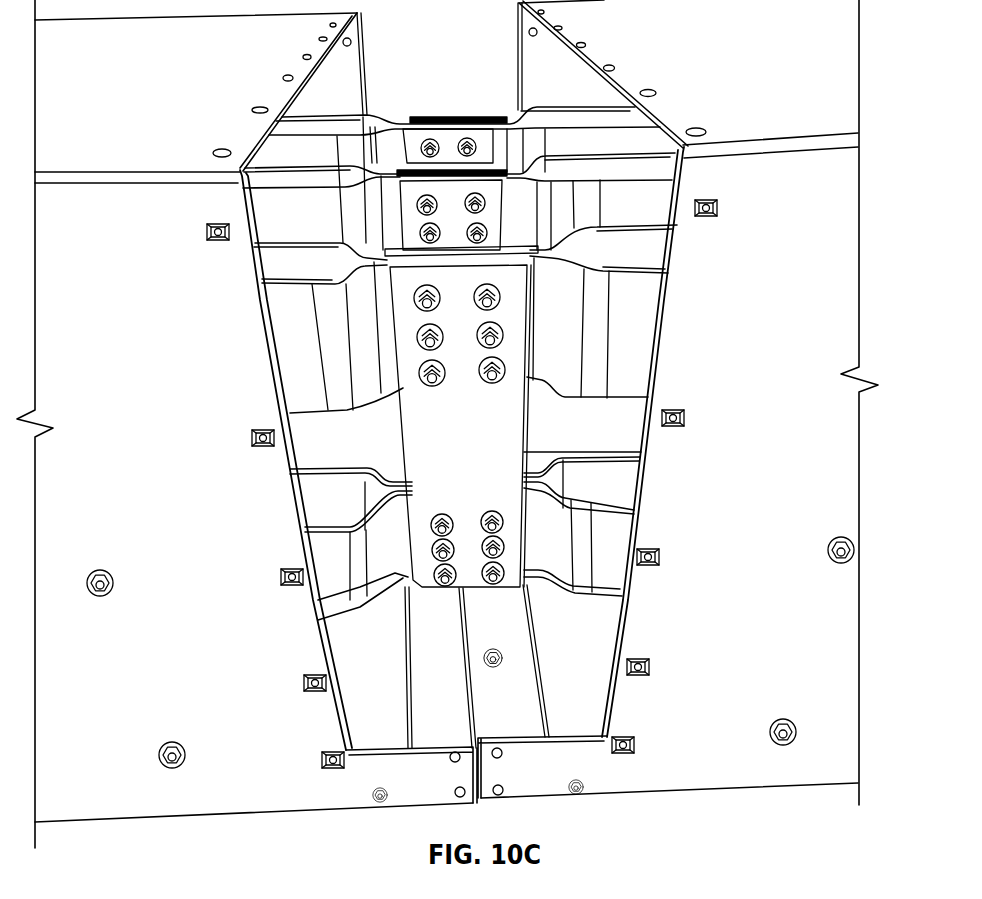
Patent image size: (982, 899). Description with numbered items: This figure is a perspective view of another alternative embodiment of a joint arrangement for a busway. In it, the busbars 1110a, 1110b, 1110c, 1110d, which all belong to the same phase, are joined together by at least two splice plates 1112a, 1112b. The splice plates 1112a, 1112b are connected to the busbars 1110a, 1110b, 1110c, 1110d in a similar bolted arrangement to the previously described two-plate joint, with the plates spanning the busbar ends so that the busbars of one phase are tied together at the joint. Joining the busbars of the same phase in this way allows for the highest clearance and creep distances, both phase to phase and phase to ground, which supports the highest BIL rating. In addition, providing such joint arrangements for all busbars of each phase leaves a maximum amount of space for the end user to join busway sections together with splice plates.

The splice plate 1112a is at (402, 285).
The splice plate 1112b is at (527, 246).
The busbar 1110a is at (591, 565).
The busbar 1110b is at (611, 473).
The busbar 1110c is at (357, 577).
The busbar 1110d is at (327, 488).